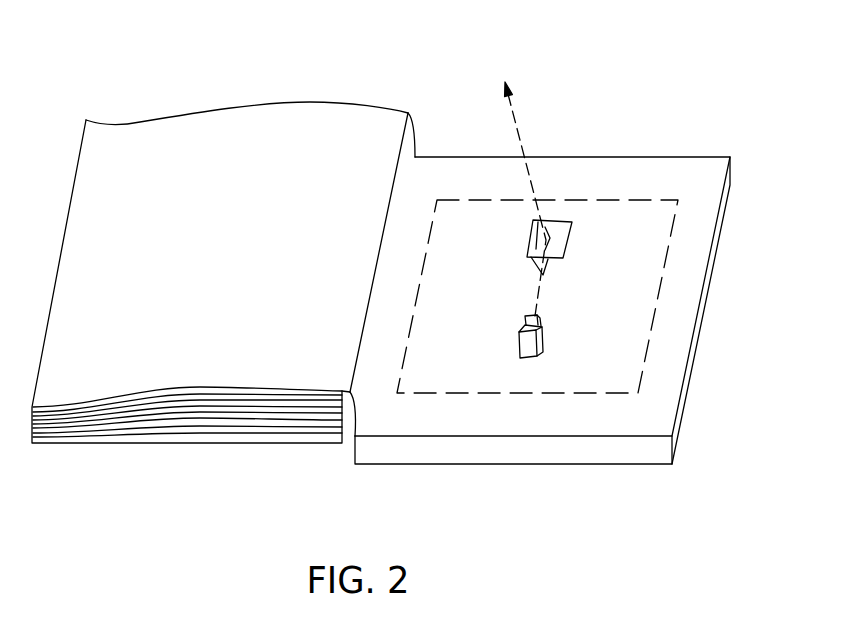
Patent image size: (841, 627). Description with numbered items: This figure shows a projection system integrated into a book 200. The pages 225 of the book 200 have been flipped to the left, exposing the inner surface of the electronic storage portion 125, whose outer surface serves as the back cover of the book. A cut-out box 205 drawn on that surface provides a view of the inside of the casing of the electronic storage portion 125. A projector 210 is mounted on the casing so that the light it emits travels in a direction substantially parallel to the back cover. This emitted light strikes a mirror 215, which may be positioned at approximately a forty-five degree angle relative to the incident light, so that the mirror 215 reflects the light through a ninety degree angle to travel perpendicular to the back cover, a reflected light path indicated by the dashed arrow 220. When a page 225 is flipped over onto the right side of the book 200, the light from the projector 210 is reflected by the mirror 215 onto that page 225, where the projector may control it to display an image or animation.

The book 200 is at (706, 87).
The pages 225 is at (410, 105).
The electronic storage portion 125 is at (563, 465).
The cut-out box 205 is at (660, 279).
The projector 210 is at (543, 348).
The mirror 215 is at (561, 221).
The light beam 220 is at (518, 128).